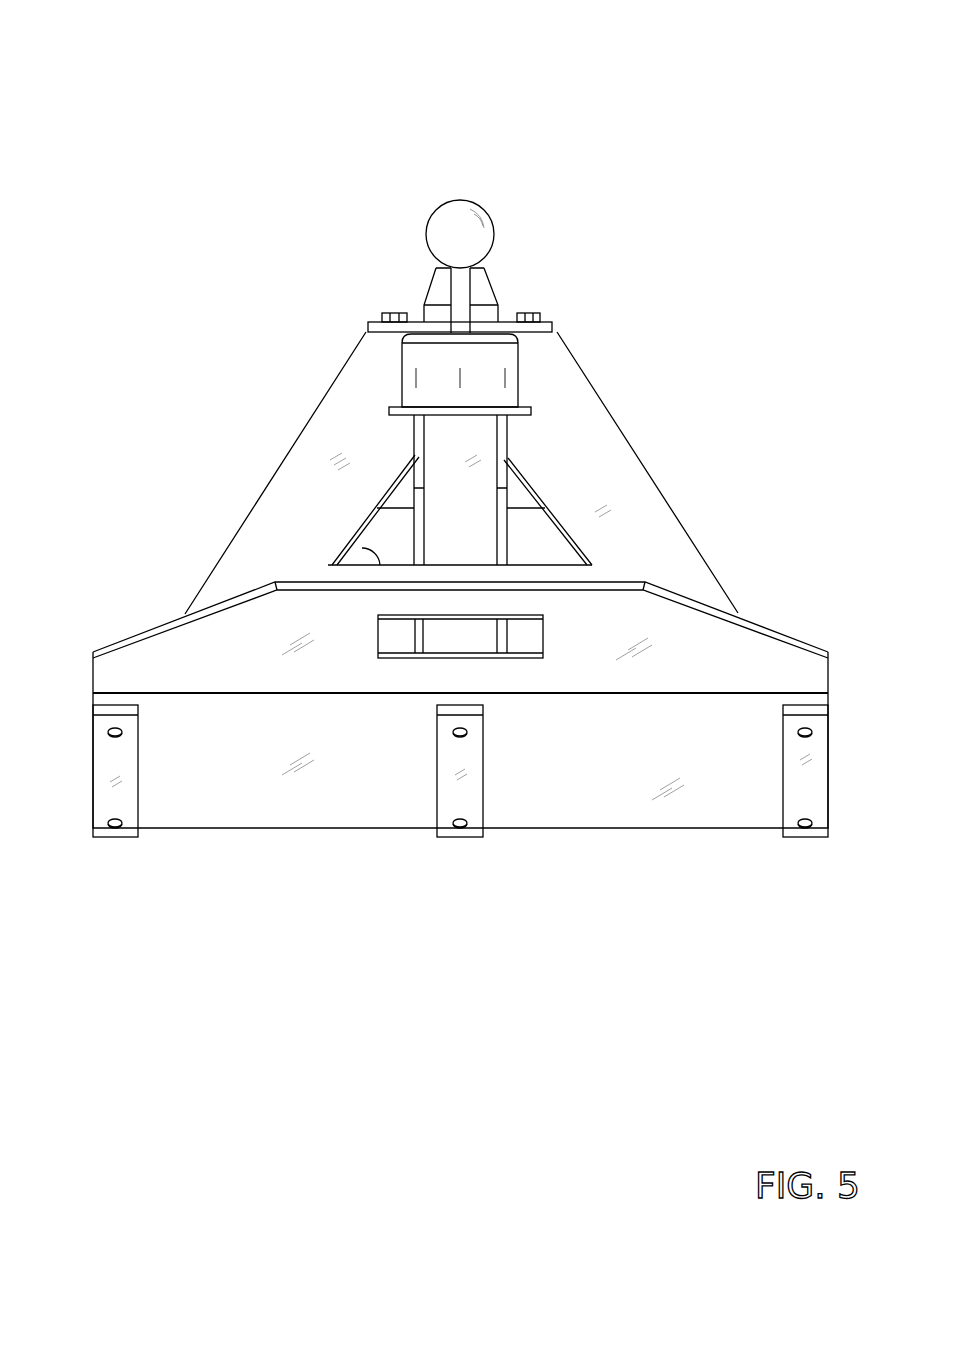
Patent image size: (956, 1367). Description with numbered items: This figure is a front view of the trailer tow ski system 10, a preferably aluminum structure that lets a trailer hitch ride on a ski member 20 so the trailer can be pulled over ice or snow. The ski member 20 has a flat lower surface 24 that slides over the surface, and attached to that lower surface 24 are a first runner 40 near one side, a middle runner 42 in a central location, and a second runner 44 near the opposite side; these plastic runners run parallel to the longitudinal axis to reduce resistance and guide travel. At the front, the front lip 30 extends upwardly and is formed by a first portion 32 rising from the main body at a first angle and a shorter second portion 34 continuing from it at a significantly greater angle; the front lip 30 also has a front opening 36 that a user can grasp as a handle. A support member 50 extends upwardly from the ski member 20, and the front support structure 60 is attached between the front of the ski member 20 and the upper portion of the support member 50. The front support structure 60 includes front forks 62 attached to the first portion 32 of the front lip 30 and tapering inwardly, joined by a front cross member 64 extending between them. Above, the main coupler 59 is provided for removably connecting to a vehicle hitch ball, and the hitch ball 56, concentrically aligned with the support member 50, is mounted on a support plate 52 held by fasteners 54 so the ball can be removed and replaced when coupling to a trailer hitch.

The trailer tow ski system 10 is at (702, 130).
The ski member 20 is at (333, 834).
The lower surface 24 is at (600, 828).
The front lip 30 is at (130, 628).
The first portion 32 is at (242, 775).
The second portion 34 is at (725, 660).
The front opening 36 is at (543, 637).
The first runner 40 is at (113, 837).
The middle runner 42 is at (458, 837).
The second runner 44 is at (803, 837).
The support member 50 is at (453, 538).
The support plate 52 is at (508, 318).
The fasteners 54 is at (388, 313).
The hitch ball 56 is at (445, 203).
The main coupler 59 is at (518, 368).
The front support structure 60 is at (668, 484).
The front forks 62 is at (303, 458).
The front cross member 64 is at (337, 542).